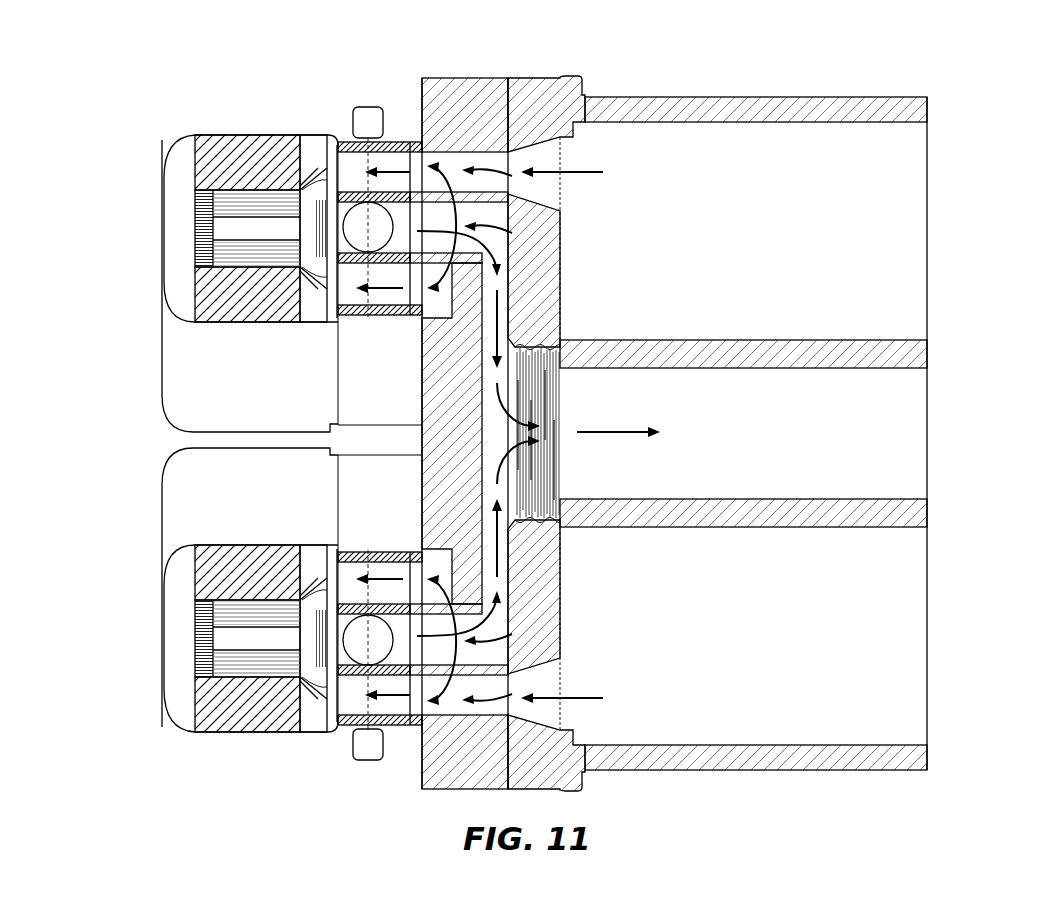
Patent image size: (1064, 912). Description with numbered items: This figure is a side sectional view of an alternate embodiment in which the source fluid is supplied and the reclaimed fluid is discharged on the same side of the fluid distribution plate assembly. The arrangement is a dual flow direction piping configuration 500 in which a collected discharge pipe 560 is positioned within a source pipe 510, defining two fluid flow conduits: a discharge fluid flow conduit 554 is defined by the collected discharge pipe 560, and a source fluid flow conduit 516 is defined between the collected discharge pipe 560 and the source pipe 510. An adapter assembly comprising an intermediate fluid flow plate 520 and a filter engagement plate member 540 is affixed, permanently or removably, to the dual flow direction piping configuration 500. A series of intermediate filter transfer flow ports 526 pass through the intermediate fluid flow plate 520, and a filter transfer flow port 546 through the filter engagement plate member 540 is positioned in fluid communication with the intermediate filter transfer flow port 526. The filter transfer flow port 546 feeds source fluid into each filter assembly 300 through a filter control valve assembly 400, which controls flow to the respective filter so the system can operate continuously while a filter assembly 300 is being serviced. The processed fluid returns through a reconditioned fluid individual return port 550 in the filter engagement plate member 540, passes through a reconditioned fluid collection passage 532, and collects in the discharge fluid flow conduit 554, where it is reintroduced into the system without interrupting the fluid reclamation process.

The filter assembly 300 is at (170, 126).
The filter control valve assembly 400 is at (337, 115).
The dual flow direction piping configuration 500 is at (951, 80).
The source pipe 510 is at (757, 96).
The source fluid flow conduit 516 is at (900, 216).
The intermediate fluid flow plate 520 is at (541, 77).
The intermediate filter transfer flow port 526 is at (537, 160).
The reconditioned fluid collection passage 532 is at (493, 552).
The filter engagement plate member 540 is at (467, 77).
The filter transfer flow port 546 is at (508, 194).
The reconditioned fluid individual return port 550 is at (512, 233).
The discharge fluid flow conduit 554 is at (897, 432).
The collected discharge pipe 560 is at (755, 339).